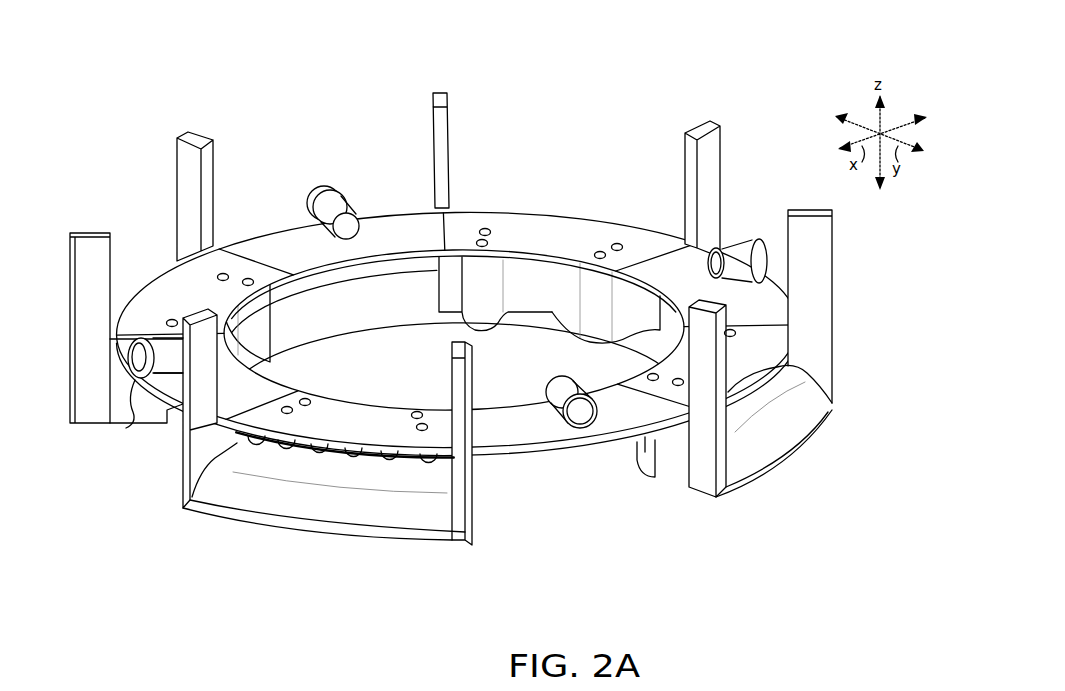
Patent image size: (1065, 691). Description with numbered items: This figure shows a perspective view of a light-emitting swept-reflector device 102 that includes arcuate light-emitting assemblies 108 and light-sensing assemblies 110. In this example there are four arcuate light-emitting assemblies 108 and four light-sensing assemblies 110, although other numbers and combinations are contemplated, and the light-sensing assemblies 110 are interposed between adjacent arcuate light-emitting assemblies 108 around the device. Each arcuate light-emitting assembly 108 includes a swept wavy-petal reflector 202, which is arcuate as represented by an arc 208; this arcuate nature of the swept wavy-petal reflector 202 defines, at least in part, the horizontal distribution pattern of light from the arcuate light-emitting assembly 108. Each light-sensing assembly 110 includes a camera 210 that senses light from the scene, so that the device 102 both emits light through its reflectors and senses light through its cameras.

The light-emitting swept-reflector device 102 is at (262, 60).
The arcuate light-emitting assembly 108 is at (742, 548).
The light-sensing assembly 110 is at (533, 530).
The swept wavy-petal reflector 202 is at (827, 479).
The arc 208 is at (277, 480).
The camera 210 is at (713, 273).